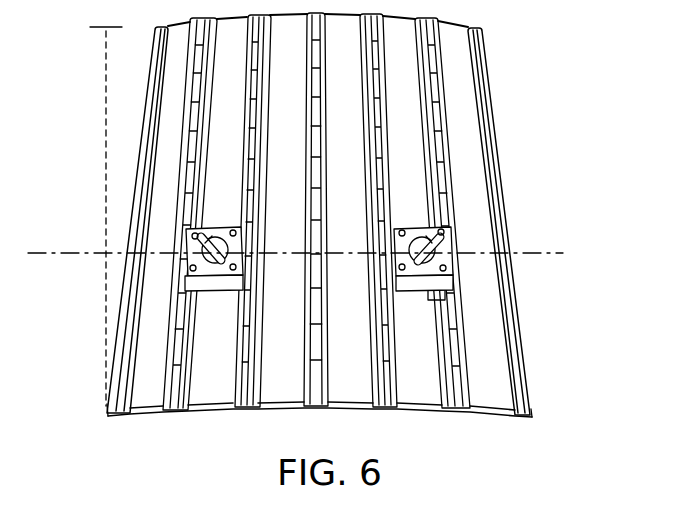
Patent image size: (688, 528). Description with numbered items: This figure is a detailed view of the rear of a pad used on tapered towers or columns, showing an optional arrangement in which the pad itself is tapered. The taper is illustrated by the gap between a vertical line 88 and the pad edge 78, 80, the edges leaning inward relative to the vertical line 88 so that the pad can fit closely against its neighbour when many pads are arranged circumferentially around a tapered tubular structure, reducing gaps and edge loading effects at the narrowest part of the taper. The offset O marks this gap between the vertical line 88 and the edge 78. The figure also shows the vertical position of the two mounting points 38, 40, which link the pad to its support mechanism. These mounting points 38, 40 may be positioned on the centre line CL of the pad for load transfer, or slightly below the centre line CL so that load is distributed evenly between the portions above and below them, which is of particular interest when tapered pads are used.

The mounting point 38 is at (200, 282).
The mounting point 40 is at (428, 282).
The edge 78 is at (145, 122).
The edge 80 is at (495, 125).
The vertical line 88 is at (106, 70).
The offset O is at (67, 174).
The centre line CL is at (314, 253).